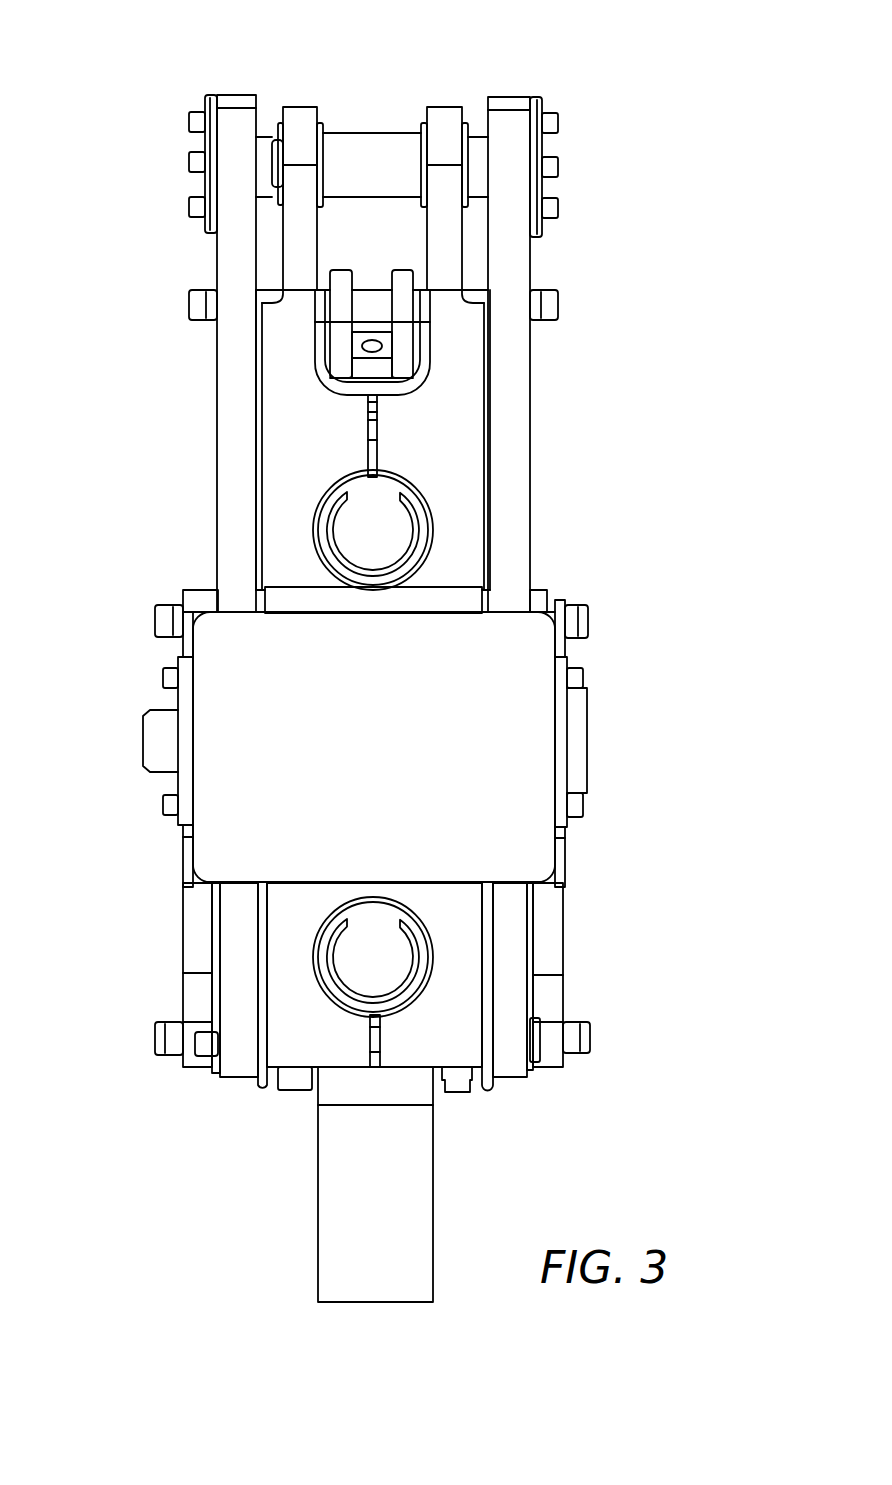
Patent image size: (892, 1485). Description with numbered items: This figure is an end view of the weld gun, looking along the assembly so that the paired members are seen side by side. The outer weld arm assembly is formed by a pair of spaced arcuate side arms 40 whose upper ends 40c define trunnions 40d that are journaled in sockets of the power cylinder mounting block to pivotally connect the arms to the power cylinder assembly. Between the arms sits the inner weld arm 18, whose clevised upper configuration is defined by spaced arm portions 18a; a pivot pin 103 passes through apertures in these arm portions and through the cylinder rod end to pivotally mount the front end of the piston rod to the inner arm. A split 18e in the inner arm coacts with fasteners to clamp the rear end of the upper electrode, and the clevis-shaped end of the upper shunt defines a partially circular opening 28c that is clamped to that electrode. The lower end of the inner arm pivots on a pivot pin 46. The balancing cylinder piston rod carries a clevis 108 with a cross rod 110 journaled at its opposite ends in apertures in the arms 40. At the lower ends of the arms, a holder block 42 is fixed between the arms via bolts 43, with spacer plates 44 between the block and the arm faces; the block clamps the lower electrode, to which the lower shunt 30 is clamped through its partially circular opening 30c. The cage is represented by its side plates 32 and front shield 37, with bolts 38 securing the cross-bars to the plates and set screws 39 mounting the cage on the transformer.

The inner weld arm 18 is at (283, 430).
The spaced arm portions 18a is at (300, 106).
The split 18e is at (378, 420).
The partially circular opening 28c is at (345, 530).
The lower shunt 30 is at (317, 1233).
The partially circular opening 30c is at (332, 955).
The side plates 32 is at (178, 917).
The front shield 37 is at (465, 734).
The bolts 38 is at (590, 1040).
The set screws 39 is at (468, 1092).
The side arms 40 is at (218, 513).
The upper ends of outer arms 40c is at (233, 95).
The trunnions 40d is at (265, 135).
The holder block 42 is at (423, 900).
The bolts 43 is at (538, 1027).
The spacer plates 44 is at (262, 1090).
The pivot pin 46 is at (143, 716).
The pivot pin 103 is at (365, 133).
The clevis 108 is at (405, 268).
The cross rod 110 is at (377, 290).